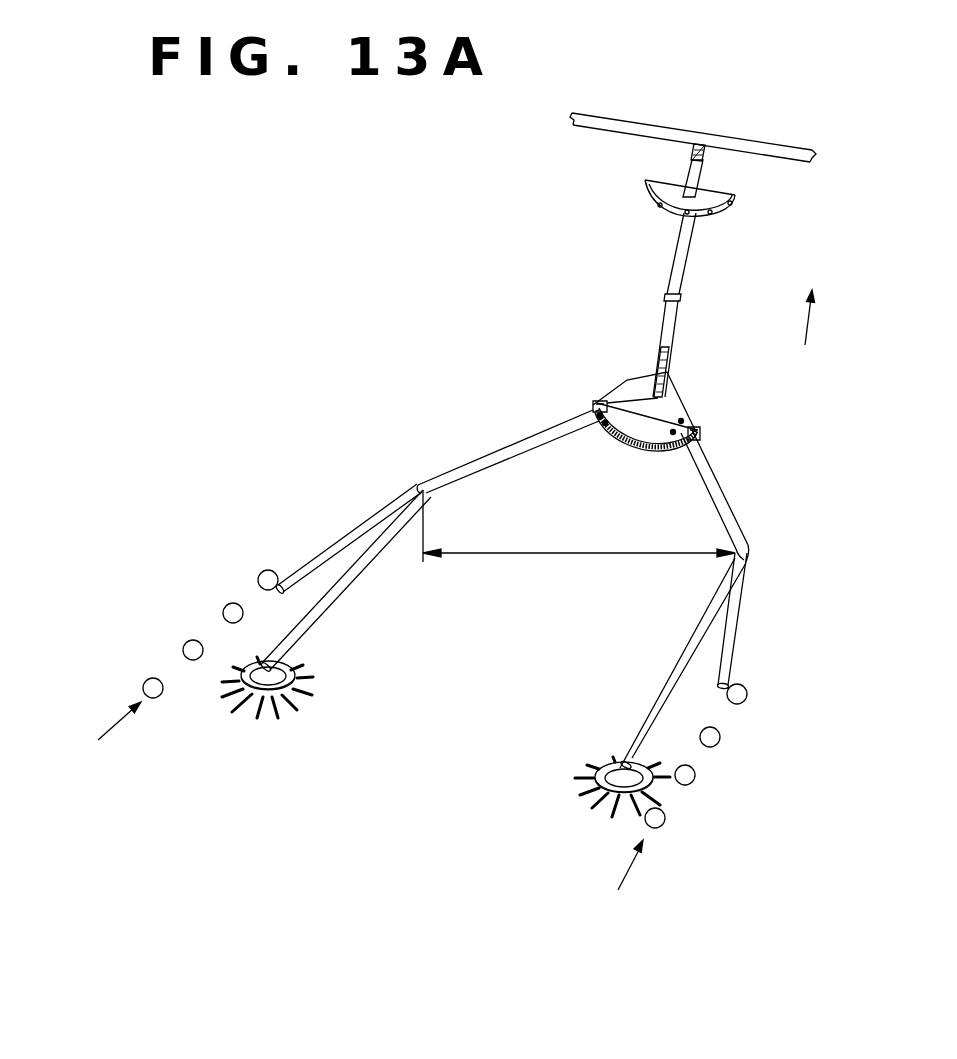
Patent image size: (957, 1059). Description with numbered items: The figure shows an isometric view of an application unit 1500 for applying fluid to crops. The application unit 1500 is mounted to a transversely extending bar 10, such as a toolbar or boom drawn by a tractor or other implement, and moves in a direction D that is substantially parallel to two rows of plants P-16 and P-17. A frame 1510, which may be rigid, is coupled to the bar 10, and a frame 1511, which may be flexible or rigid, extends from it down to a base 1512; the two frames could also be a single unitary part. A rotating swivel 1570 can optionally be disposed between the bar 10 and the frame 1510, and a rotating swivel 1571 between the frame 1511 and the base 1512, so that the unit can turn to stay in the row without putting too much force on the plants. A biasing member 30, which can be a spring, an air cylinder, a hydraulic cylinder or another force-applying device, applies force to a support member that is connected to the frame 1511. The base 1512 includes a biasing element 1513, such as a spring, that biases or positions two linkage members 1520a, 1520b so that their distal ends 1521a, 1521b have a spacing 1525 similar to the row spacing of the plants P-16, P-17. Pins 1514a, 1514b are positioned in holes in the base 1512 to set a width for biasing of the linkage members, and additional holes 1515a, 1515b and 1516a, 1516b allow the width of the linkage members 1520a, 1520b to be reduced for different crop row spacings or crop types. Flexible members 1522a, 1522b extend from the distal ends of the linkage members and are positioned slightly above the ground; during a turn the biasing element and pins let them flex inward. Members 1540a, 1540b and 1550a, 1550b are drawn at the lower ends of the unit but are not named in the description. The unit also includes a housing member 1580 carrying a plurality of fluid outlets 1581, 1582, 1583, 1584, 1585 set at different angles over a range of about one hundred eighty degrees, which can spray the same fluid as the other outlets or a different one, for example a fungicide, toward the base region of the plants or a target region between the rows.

The application unit 1500 is at (390, 189).
The transversely extending bar 10 is at (750, 142).
The biasing member 30 is at (664, 340).
The frame 1510 is at (700, 167).
The frame 1511 is at (690, 243).
The base 1512 is at (640, 380).
The biasing element 1513 is at (630, 455).
The pin 1514a is at (612, 400).
The pin 1514b is at (692, 426).
The additional hole 1515a is at (593, 409).
The additional hole 1515b is at (694, 430).
The additional hole 1516a is at (590, 425).
The additional hole 1516b is at (697, 440).
The linkage member 1520a is at (447, 468).
The linkage member 1520b is at (728, 502).
The distal end 1521a is at (440, 495).
The distal end 1521b is at (748, 542).
The flexible member 1522a is at (337, 537).
The flexible member 1522b is at (737, 650).
The spacing 1525 is at (610, 555).
The first brush arm 1540a is at (338, 594).
The second brush arm 1540b is at (653, 703).
The first brush 1550a is at (308, 703).
The second brush 1550b is at (600, 787).
The rotating swivel 1570 is at (697, 143).
The rotating swivel 1571 is at (669, 376).
The housing member 1580 is at (660, 187).
The fluid outlet 1581 is at (666, 210).
The fluid outlet 1582 is at (658, 204).
The fluid outlet 1583 is at (665, 213).
The fluid outlet 1584 is at (728, 210).
The fluid outlet 1585 is at (735, 198).
The direction D is at (808, 318).
The row of plants P-16 is at (118, 726).
The row of plants P-17 is at (632, 868).